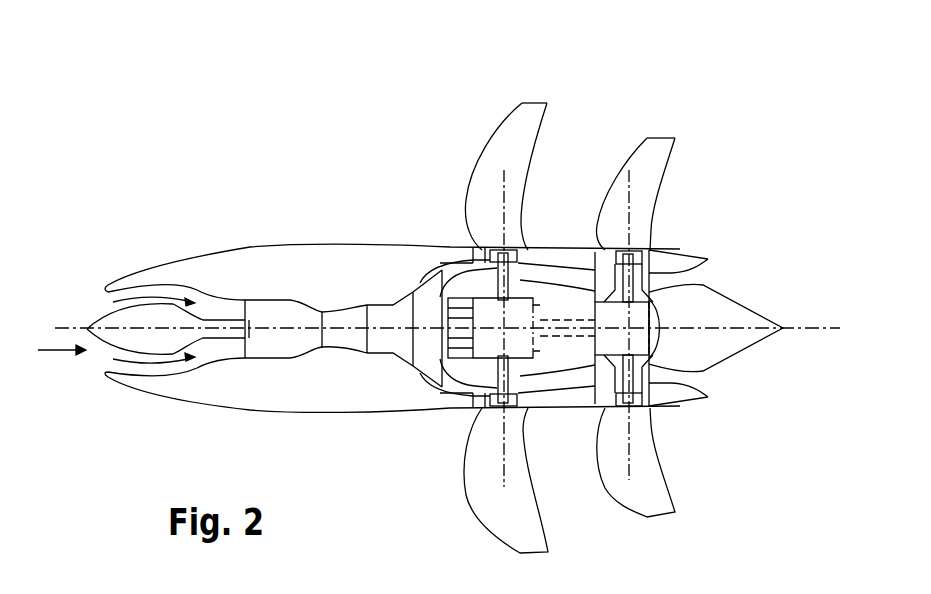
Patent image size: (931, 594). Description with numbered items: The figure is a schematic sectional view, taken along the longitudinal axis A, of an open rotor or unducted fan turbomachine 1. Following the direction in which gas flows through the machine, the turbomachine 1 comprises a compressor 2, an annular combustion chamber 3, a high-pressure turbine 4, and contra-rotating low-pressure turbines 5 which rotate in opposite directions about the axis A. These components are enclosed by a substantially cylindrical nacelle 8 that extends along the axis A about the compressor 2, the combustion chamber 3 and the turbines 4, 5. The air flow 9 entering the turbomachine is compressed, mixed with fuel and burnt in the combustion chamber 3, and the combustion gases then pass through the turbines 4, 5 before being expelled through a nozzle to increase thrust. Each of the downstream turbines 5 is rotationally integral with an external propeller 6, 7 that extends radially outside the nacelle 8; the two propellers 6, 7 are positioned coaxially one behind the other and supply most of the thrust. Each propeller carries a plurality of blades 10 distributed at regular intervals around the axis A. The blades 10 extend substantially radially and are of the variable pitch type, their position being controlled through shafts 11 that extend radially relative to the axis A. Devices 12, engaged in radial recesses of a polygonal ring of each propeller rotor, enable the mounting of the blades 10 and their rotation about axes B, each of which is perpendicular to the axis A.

The turbomachine 1 is at (197, 221).
The compressor 2 is at (295, 345).
The annular combustion chamber 3 is at (347, 342).
The high-pressure turbine 4 is at (387, 343).
The low-pressure turbines 5 is at (426, 365).
The external propeller 6 is at (530, 288).
The external propeller 7 is at (636, 142).
The nacelle 8 is at (323, 275).
The air flow 9 is at (53, 351).
The blades 10 is at (520, 132).
The shafts 11 is at (438, 376).
The devices 12 is at (497, 250).
The longitudinal axis A is at (815, 328).
The axes B is at (504, 183).